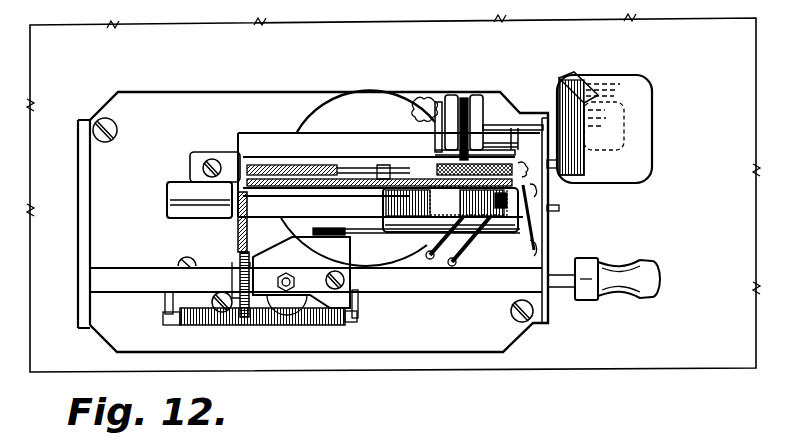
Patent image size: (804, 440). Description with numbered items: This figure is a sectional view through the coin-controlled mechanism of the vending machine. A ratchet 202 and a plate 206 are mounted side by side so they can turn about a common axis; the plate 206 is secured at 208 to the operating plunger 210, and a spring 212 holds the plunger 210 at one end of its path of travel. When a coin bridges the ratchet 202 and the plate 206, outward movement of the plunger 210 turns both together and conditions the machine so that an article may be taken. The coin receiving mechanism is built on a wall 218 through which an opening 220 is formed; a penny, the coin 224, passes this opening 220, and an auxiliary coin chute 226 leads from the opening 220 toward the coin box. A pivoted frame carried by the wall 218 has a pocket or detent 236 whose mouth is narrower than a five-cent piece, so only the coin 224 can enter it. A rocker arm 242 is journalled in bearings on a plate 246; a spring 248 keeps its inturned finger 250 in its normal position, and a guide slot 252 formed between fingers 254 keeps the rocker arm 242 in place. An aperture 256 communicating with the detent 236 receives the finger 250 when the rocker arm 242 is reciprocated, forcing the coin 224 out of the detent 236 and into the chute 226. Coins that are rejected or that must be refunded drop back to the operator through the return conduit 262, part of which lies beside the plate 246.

The ratchet 202 is at (300, 127).
The plate 206 is at (392, 100).
The securing point 208 is at (288, 277).
The operating plunger 210 is at (427, 280).
The spring 212 is at (265, 320).
The wall 218 is at (273, 190).
The opening 220 is at (417, 170).
The coin 224 is at (562, 167).
The auxiliary coin chute 226 is at (200, 218).
The detent 236 is at (513, 198).
The rocker arm 242 is at (473, 121).
The plate 246 is at (287, 161).
The spring 248 is at (441, 100).
The inturned finger 250 is at (490, 145).
The guide slot 252 is at (455, 118).
The fingers 254 is at (468, 118).
The aperture 256 is at (523, 213).
The return conduit 262 is at (559, 155).